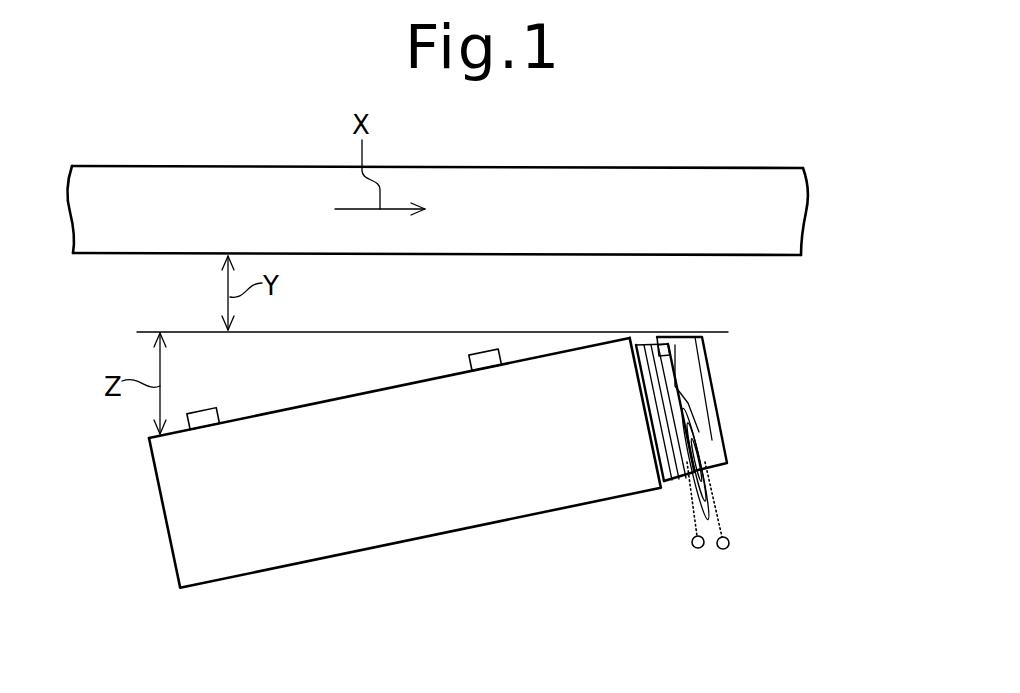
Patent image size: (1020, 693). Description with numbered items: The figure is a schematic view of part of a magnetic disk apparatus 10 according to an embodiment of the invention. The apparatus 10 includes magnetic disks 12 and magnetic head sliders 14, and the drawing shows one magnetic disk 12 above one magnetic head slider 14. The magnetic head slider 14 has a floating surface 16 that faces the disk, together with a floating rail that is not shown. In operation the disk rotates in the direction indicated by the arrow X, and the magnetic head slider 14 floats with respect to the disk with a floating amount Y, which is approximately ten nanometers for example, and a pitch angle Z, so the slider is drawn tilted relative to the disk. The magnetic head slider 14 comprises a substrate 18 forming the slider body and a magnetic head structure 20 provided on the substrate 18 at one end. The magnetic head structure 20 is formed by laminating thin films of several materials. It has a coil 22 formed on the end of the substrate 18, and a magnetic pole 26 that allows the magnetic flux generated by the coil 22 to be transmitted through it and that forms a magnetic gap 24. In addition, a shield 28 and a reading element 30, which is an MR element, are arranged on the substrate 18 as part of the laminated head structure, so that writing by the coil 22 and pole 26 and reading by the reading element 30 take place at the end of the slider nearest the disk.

The magnetic disk apparatus 10 is at (842, 274).
The magnetic disk 12 is at (580, 197).
The magnetic head slider 14 is at (479, 469).
The floating surface 16 is at (325, 400).
The substrate 18 is at (525, 500).
The magnetic head structure 20 is at (709, 416).
The coil 22 is at (698, 435).
The magnetic gap 24 is at (660, 345).
The magnetic pole 26 is at (698, 390).
The shield 28 is at (657, 450).
The reading element (MR element) 30 is at (645, 362).